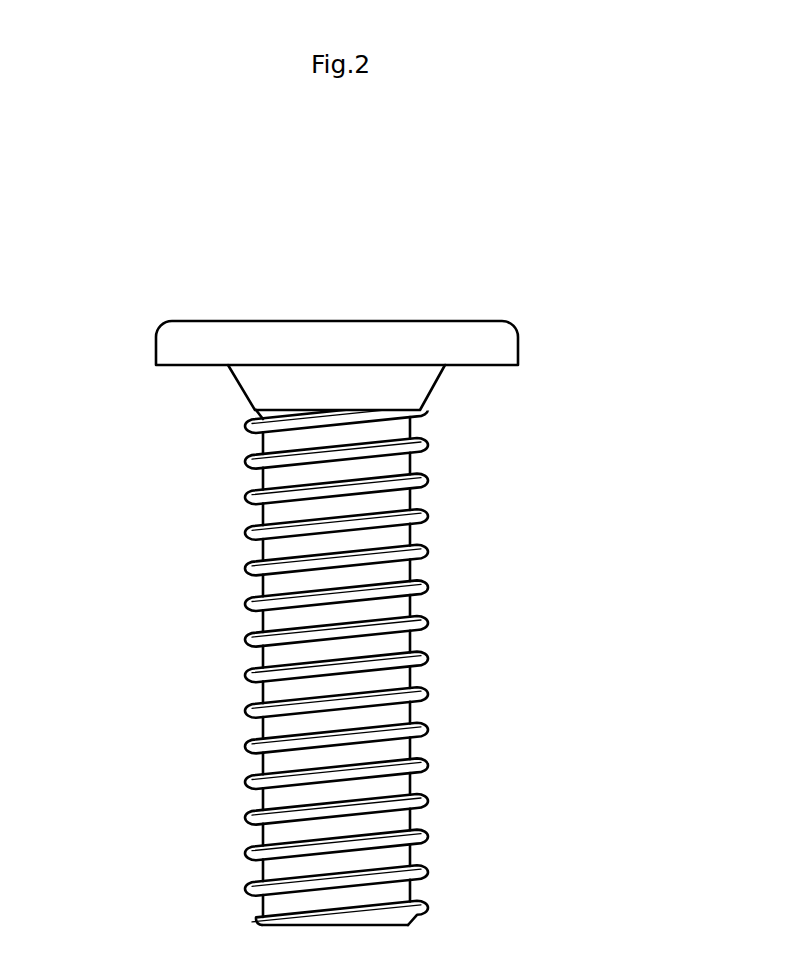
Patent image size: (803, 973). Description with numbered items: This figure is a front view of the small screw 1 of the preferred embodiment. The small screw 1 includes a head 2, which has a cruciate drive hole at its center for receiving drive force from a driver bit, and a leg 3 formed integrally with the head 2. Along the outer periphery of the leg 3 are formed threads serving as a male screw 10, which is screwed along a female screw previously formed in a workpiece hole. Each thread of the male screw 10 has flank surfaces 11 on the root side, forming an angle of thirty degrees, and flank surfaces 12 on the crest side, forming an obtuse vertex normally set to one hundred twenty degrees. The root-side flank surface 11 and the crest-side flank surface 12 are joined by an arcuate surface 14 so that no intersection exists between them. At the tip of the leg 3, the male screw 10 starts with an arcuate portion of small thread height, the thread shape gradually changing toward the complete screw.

The small screw 1 is at (415, 295).
The head 2 is at (192, 330).
The leg 3 is at (403, 572).
The male screw 10 is at (432, 478).
The flank surface on the root side 11 is at (265, 475).
The flank surface on the crest side 12 is at (247, 612).
The arcuate surface 14 is at (428, 687).